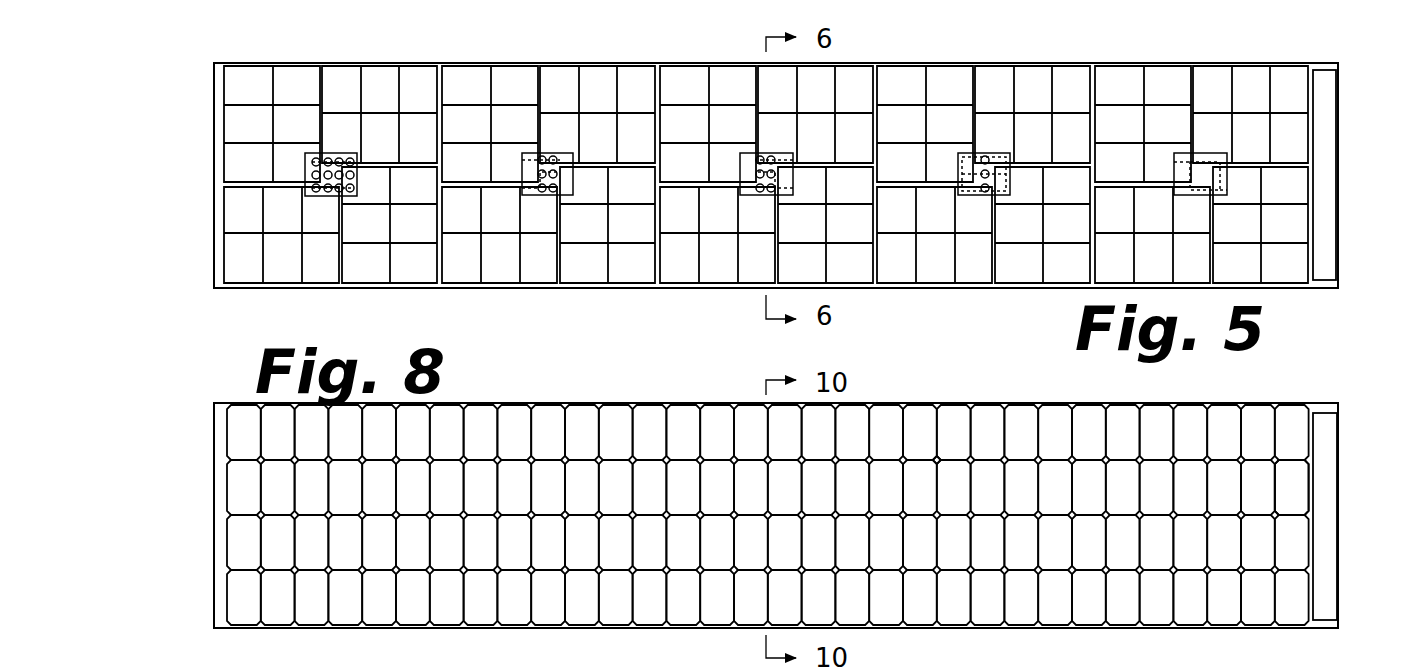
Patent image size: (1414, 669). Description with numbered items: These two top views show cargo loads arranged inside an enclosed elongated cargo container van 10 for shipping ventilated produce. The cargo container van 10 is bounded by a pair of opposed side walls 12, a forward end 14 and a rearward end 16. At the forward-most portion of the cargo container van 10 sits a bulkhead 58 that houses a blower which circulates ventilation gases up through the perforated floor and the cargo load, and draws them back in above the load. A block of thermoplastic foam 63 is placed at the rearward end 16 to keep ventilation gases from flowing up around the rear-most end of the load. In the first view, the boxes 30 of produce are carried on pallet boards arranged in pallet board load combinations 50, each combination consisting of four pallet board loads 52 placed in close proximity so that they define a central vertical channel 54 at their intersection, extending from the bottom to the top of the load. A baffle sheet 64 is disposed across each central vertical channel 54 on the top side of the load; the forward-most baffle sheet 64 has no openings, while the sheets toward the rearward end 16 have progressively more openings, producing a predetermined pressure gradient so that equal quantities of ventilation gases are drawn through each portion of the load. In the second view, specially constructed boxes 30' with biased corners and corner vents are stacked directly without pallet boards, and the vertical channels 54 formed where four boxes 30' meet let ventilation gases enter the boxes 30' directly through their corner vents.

In FIG. 5, the cargo container van 10 is at (1244, 62).
In FIG. 8, the cargo container van 10 is at (1273, 402).
In FIG. 5, the side walls 12 is at (1055, 62).
In FIG. 8, the side walls 12 is at (565, 403).
In FIG. 5, the forward end 14 is at (1338, 158).
In FIG. 8, the forward end 14 is at (1338, 580).
In FIG. 5, the rearward end 16 is at (216, 232).
In FIG. 8, the rearward end 16 is at (216, 572).
In FIG. 5, the boxes 30 is at (934, 265).
In FIG. 8, the specially constructed boxes 30' is at (1334, 487).
In FIG. 5, the pallet board load combination 50 is at (417, 86).
In FIG. 5, the pallet board load 52 is at (1175, 90).
In FIG. 8, the central vertical channel 54 is at (937, 460).
In FIG. 5, the bulkhead 58 is at (1323, 238).
In FIG. 8, the bulkhead 58 is at (1323, 532).
In FIG. 5, the block of thermoplastic foam 63 is at (218, 100).
In FIG. 8, the block of thermoplastic foam 63 is at (218, 440).
In FIG. 5, the baffle sheet 64 is at (340, 153).